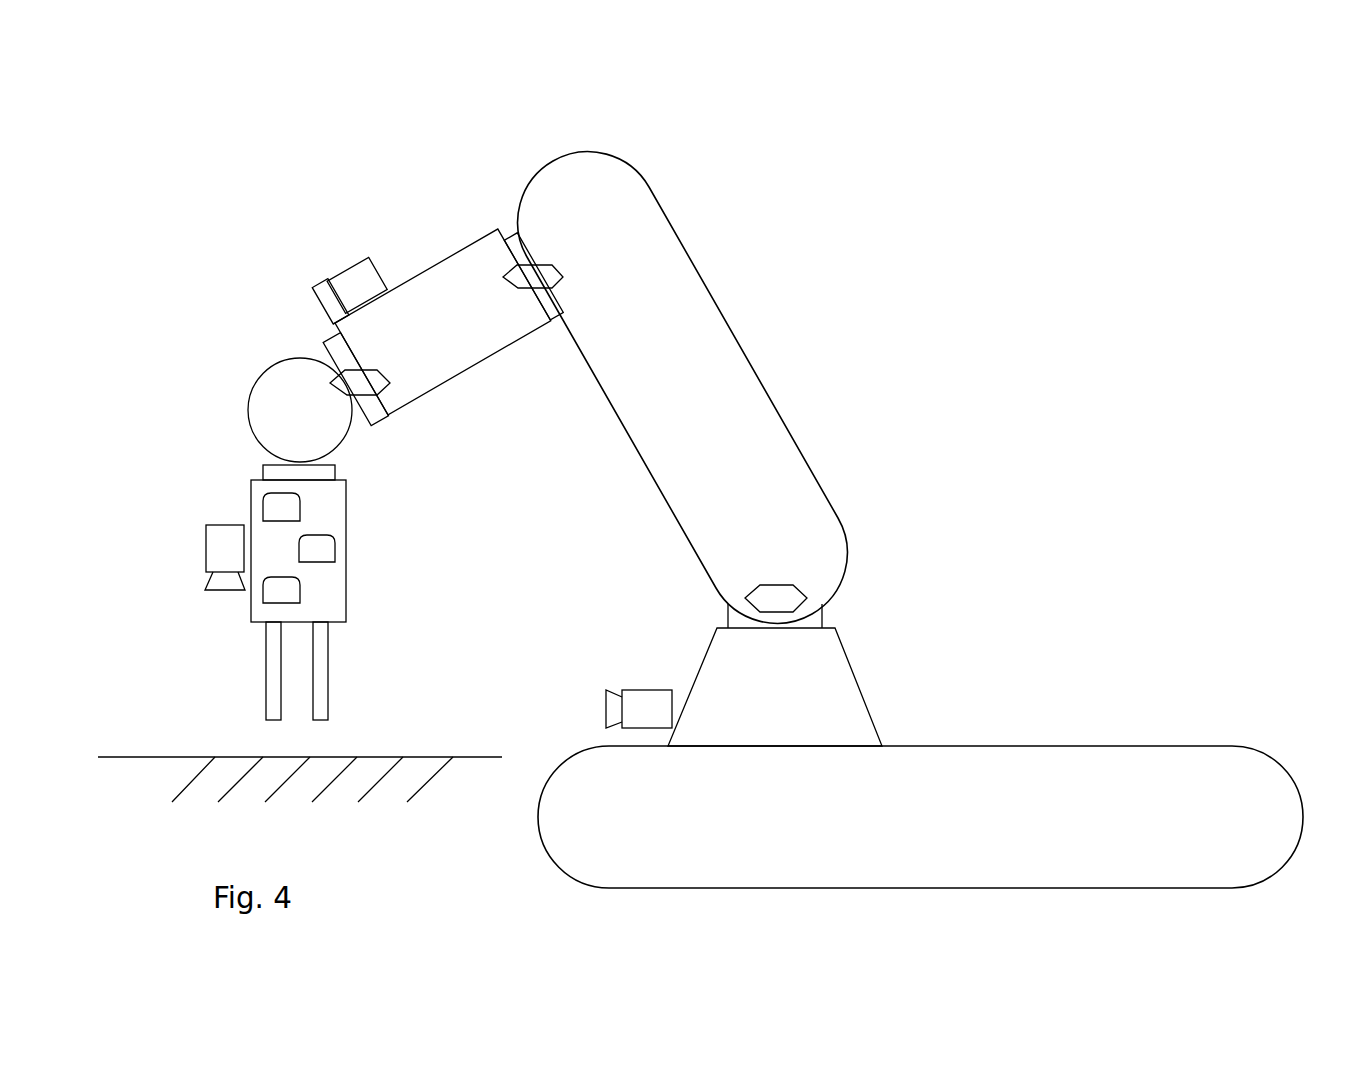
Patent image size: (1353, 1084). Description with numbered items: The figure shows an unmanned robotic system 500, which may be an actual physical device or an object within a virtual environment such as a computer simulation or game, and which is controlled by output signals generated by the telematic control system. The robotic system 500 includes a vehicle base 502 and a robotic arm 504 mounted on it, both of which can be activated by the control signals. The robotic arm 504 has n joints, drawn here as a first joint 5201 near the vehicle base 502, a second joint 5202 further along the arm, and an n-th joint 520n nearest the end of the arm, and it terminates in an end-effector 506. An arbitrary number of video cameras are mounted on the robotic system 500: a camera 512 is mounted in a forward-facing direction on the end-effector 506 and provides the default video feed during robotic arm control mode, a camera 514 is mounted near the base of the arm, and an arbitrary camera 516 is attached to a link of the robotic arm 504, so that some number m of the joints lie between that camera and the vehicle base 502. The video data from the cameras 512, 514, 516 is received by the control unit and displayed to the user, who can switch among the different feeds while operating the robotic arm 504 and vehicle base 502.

The unmanned robotic system 500 is at (1040, 490).
The vehicle base 502 is at (1008, 746).
The robotic arm 504 is at (283, 238).
The end-effector 506 is at (328, 670).
The video camera 512 is at (200, 559).
The video camera 514 is at (561, 704).
The video camera 516 is at (313, 288).
The joint 5201 is at (701, 629).
The joint 5202 is at (552, 185).
The joint 520n is at (399, 425).